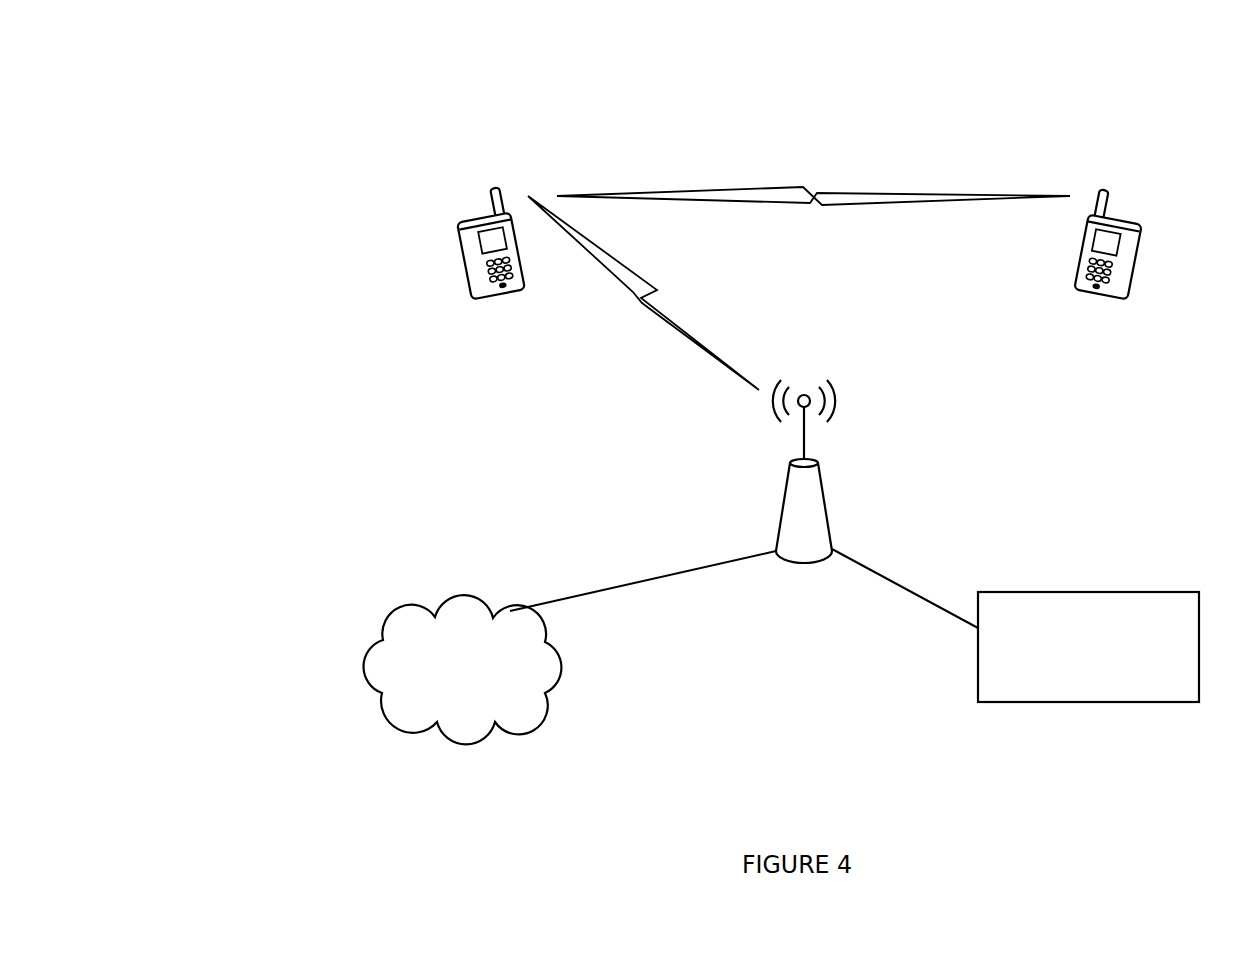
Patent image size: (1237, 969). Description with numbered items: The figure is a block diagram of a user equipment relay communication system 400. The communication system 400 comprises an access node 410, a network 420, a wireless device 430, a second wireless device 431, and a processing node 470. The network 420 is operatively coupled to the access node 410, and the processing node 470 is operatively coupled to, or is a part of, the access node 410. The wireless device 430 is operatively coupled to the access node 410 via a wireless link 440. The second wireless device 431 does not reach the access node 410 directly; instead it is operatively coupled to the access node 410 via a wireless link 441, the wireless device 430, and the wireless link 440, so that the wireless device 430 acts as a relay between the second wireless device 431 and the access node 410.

The communication system 400 is at (242, 65).
The access node 410 is at (808, 563).
The network 420 is at (487, 690).
The wireless device 430 is at (472, 298).
The wireless device 431 is at (1127, 300).
The wireless link 440 is at (634, 294).
The wireless link 441 is at (822, 205).
The processing node 470 is at (1108, 688).